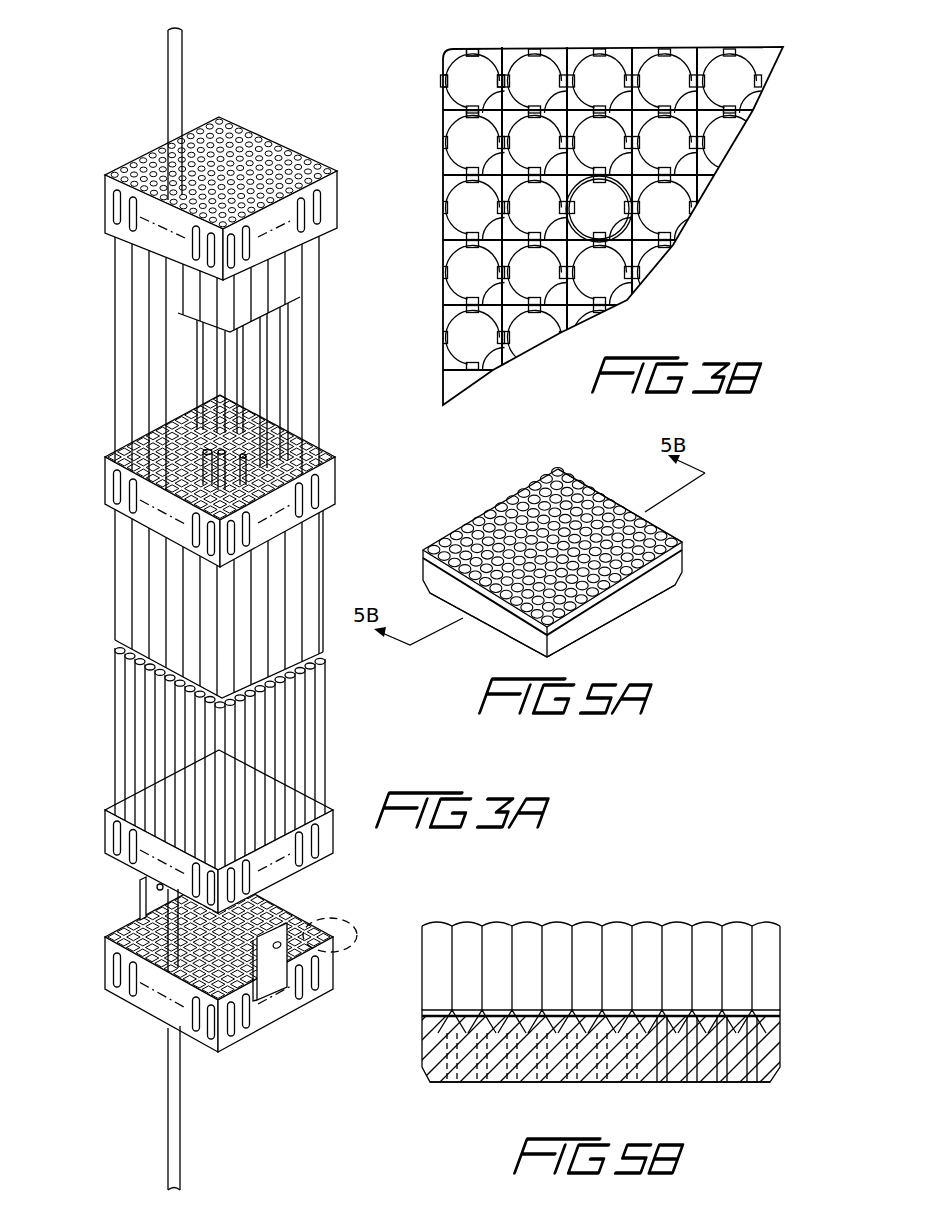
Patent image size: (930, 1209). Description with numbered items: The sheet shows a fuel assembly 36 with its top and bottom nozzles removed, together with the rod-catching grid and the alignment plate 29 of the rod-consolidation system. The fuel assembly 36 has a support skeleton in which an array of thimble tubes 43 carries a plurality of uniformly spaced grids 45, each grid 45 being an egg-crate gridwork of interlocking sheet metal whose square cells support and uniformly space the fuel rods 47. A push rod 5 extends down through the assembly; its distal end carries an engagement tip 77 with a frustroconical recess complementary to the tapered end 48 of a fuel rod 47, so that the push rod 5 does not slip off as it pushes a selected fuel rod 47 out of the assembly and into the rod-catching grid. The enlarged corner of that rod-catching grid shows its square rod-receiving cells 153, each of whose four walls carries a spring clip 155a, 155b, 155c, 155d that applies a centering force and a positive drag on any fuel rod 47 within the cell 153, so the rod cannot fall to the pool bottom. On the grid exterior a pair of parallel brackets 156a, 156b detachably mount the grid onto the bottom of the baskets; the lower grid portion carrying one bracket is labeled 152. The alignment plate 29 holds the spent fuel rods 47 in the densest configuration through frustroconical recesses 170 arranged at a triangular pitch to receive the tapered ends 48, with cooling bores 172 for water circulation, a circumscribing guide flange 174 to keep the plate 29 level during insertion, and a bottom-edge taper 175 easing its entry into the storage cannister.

In FIG. 3A, the push rod 5 is at (180, 68).
In FIG. 3A, the fuel assembly 36 is at (100, 363).
In FIG. 3A, the thimble tubes 43 is at (283, 411).
In FIG. 3A, the grids 45 is at (145, 216).
In FIG. 3A, the fuel rods 47 is at (146, 306).
In FIG. 5B, the fuel rods 47 is at (497, 940).
In FIG. 3A, the tapered end 48 is at (298, 153).
In FIG. 5B, the tapered end 48 is at (455, 1015).
In FIG. 3A, the engagement tip 77 is at (176, 358).
In FIG. 3A, the bottom grid 152 is at (264, 1012).
In FIG. 3A, the rod-receiving cells 153 is at (300, 913).
In FIG. 3B, the rod-receiving cells 153 is at (653, 68).
In FIG. 3B, the spring clip 155a is at (443, 72).
In FIG. 3B, the spring clip 155b is at (470, 105).
In FIG. 3B, the spring clip 155c is at (497, 72).
In FIG. 3B, the spring clip 155d is at (473, 47).
In FIG. 3A, the bracket 156a is at (277, 982).
In FIG. 3A, the bracket 156b is at (148, 888).
In FIG. 5A, the alignment plate 29 is at (636, 588).
In FIG. 5B, the alignment plate 29 is at (465, 1085).
In FIG. 5A, the frustroconical recesses 170 is at (476, 531).
In FIG. 5B, the frustroconical recesses 170 is at (490, 1020).
In FIG. 5B, the cooling bores 172 is at (690, 1075).
In FIG. 5A, the guide flange 174 is at (612, 510).
In FIG. 5B, the guide flange 174 is at (425, 1025).
In FIG. 5A, the taper 175 is at (575, 640).
In FIG. 5B, the taper 175 is at (425, 1078).